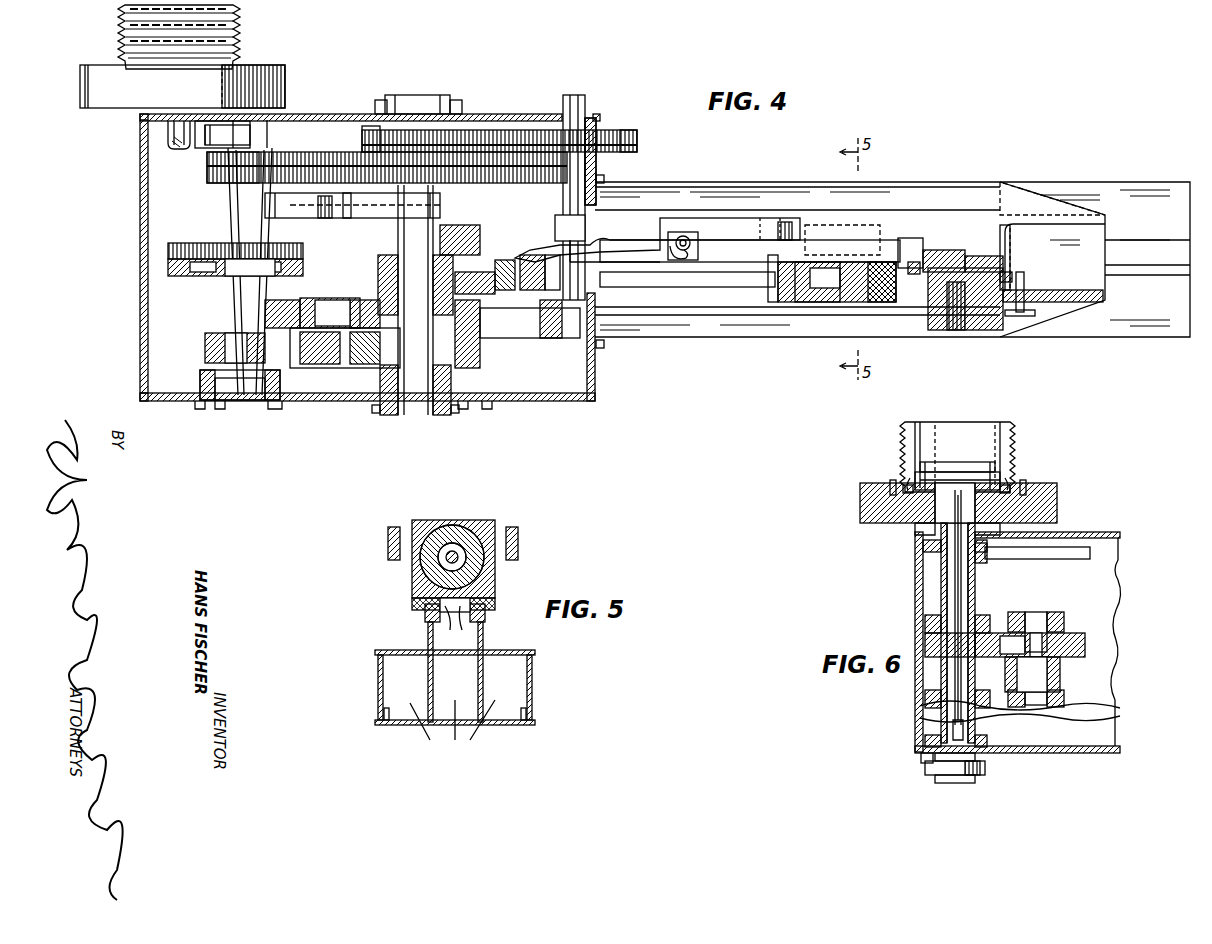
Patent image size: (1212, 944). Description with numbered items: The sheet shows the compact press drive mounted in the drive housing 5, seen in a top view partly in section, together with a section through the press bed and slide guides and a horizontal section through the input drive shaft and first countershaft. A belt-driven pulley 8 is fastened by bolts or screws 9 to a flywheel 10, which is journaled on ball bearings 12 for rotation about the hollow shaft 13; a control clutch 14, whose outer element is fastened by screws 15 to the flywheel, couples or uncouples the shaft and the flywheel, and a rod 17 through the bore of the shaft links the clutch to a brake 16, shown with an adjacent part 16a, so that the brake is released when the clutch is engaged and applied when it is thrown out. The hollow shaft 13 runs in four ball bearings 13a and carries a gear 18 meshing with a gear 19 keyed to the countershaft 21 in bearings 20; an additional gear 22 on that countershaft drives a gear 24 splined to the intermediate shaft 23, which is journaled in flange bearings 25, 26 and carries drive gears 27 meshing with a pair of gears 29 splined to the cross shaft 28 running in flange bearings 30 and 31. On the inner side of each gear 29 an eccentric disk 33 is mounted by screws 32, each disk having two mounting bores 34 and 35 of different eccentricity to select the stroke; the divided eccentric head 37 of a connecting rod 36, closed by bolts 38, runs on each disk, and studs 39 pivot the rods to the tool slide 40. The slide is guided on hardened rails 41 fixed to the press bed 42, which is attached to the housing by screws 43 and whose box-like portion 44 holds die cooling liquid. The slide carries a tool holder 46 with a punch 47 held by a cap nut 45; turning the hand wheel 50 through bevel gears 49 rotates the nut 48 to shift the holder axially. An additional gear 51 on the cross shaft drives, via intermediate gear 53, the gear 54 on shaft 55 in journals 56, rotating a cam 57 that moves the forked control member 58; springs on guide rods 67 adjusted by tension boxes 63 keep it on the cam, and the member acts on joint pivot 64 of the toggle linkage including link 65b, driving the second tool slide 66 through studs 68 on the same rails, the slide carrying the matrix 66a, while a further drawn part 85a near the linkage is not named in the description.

In FIG. 4, the drive housing 5 is at (140, 330).
In FIG. 6, the drive housing 5 is at (1117, 750).
In FIG. 4, the pulley 8 is at (238, 33).
In FIG. 6, the pulley 8 is at (1015, 432).
In FIG. 6, the bolts or screws 9 is at (888, 482).
In FIG. 4, the flywheel 10 is at (283, 84).
In FIG. 6, the flywheel 10 is at (860, 506).
In FIG. 6, the ball bearings 12 is at (922, 533).
In FIG. 4, the hollow shaft 13 is at (168, 134).
In FIG. 6, the hollow shaft 13 is at (976, 603).
In FIG. 6, the ball bearings 13a is at (904, 712).
In FIG. 6, the control clutch 14 is at (955, 470).
In FIG. 6, the screws 15 is at (905, 480).
In FIG. 6, the brake 16 is at (990, 783).
In FIG. 6, the washer 16a is at (921, 760).
In FIG. 6, the rod 17 is at (962, 668).
In FIG. 6, the gear 18 is at (942, 656).
In FIG. 6, the gear 19 is at (1070, 636).
In FIG. 6, the bearings 20 is at (1050, 616).
In FIG. 6, the countershaft 21 is at (1034, 614).
In FIG. 6, the additional gear 22 is at (1060, 668).
In FIG. 4, the intermediate shaft 23 is at (216, 212).
In FIG. 4, the gear 24 is at (178, 243).
In FIG. 4, the flange bearing 25 is at (205, 140).
In FIG. 4, the flange bearing 26 is at (212, 410).
In FIG. 4, the drive gears 27 is at (207, 180).
In FIG. 4, the cross shaft 28 is at (412, 415).
In FIG. 4, the gears 29 is at (300, 158).
In FIG. 4, the flange bearing 30 is at (446, 415).
In FIG. 4, the flange bearing 31 is at (406, 97).
In FIG. 4, the screws 32 is at (304, 368).
In FIG. 4, the eccentric disk 33 is at (349, 218).
In FIG. 4, the mounting bore 34 is at (330, 300).
In FIG. 4, the mounting bore 35 is at (404, 300).
In FIG. 4, the connecting rod 36 is at (750, 210).
In FIG. 5, the connecting rod 36 is at (388, 544).
In FIG. 4, the divided eccentric head 37 is at (284, 218).
In FIG. 4, the bolts 38 is at (324, 218).
In FIG. 4, the studs 39 is at (957, 330).
In FIG. 4, the tool slide 40 is at (992, 330).
In FIG. 4, the hardened rails 41 is at (1135, 246).
In FIG. 5, the hardened rails 41 is at (455, 664).
In FIG. 4, the press bed 42 is at (1143, 190).
In FIG. 5, the press bed 42 is at (408, 650).
In FIG. 4, the screws 43 is at (604, 176).
In FIG. 5, the box-like portion 44 is at (452, 728).
In FIG. 4, the cap nut 45 is at (912, 274).
In FIG. 4, the tool holder 46 is at (930, 260).
In FIG. 4, the punch 47 is at (822, 302).
In FIG. 5, the punch 47 is at (466, 563).
In FIG. 4, the nut 48 is at (975, 258).
In FIG. 4, the bevel gears 49 is at (1012, 260).
In FIG. 4, the hand wheel 50 is at (1022, 316).
In FIG. 4, the additional gear 51 is at (362, 141).
In FIG. 4, the intermediate gear 53 is at (494, 130).
In FIG. 4, the gear 54 is at (626, 130).
In FIG. 4, the shaft 55 is at (596, 178).
In FIG. 4, the journals 56 is at (576, 118).
In FIG. 4, the cam 57 is at (614, 252).
In FIG. 4, the forked control member 58 is at (646, 240).
In FIG. 4, the tension boxes 63 is at (684, 236).
In FIG. 4, the joint pivot 64 is at (530, 268).
In FIG. 4, the toggle link 65b is at (784, 222).
In FIG. 4, the tool slide 66 is at (853, 302).
In FIG. 5, the tool slide 66 is at (468, 520).
In FIG. 4, the matrix 66a is at (880, 302).
In FIG. 4, the guide rods 67 is at (675, 261).
In FIG. 4, the studs 68 is at (772, 302).
In FIG. 4, the bearing 85a is at (478, 276).